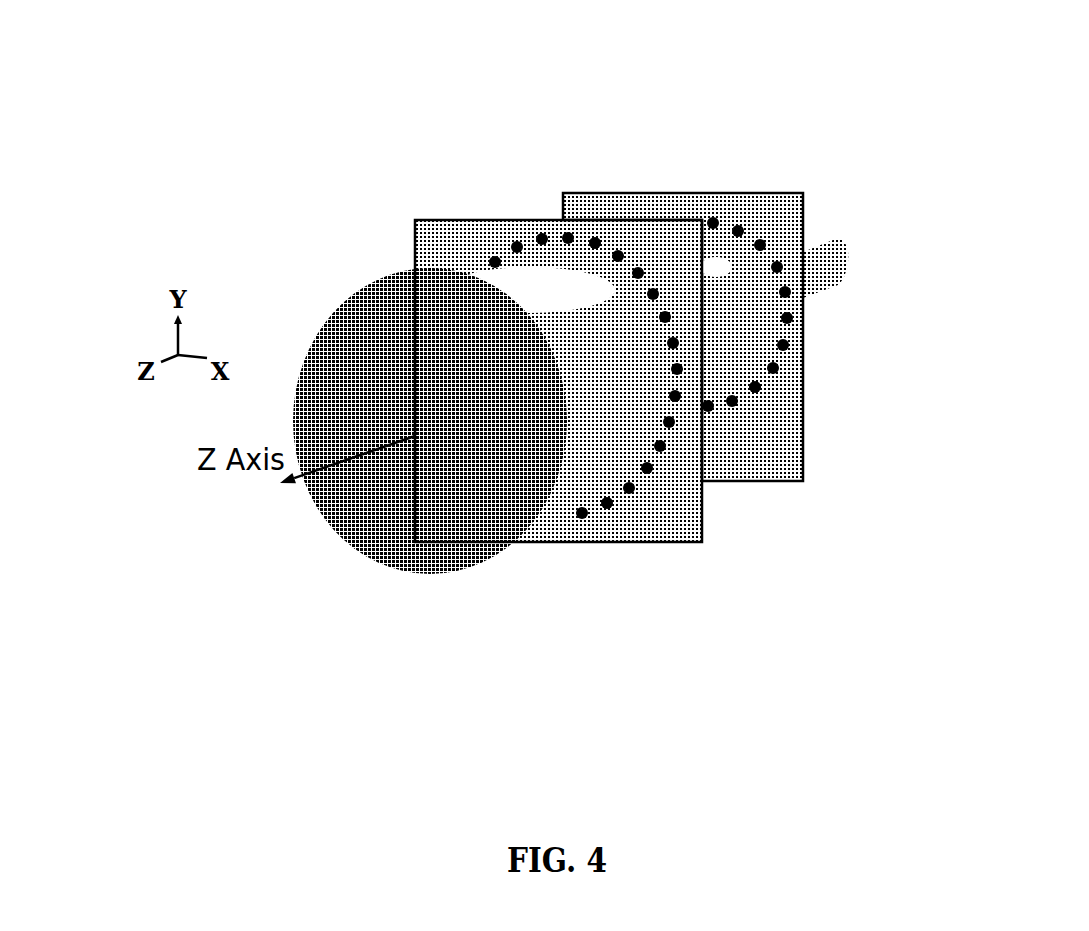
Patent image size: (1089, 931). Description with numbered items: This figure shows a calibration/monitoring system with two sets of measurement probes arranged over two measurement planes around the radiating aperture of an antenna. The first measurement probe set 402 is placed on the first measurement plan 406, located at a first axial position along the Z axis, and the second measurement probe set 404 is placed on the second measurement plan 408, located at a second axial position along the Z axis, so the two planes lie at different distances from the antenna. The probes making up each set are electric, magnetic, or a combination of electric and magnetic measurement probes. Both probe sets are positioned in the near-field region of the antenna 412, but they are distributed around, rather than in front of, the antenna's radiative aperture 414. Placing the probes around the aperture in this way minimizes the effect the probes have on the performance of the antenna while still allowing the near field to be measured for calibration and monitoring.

The measurement probe set 402 is at (783, 385).
The measurement probe set 404 is at (628, 521).
The measurement plan #1 at Z=Z1 406 is at (780, 208).
The measurement plan #2 at Z=Z2 408 is at (430, 232).
The antenna 412 is at (858, 257).
The radiative aperture 414 is at (449, 557).